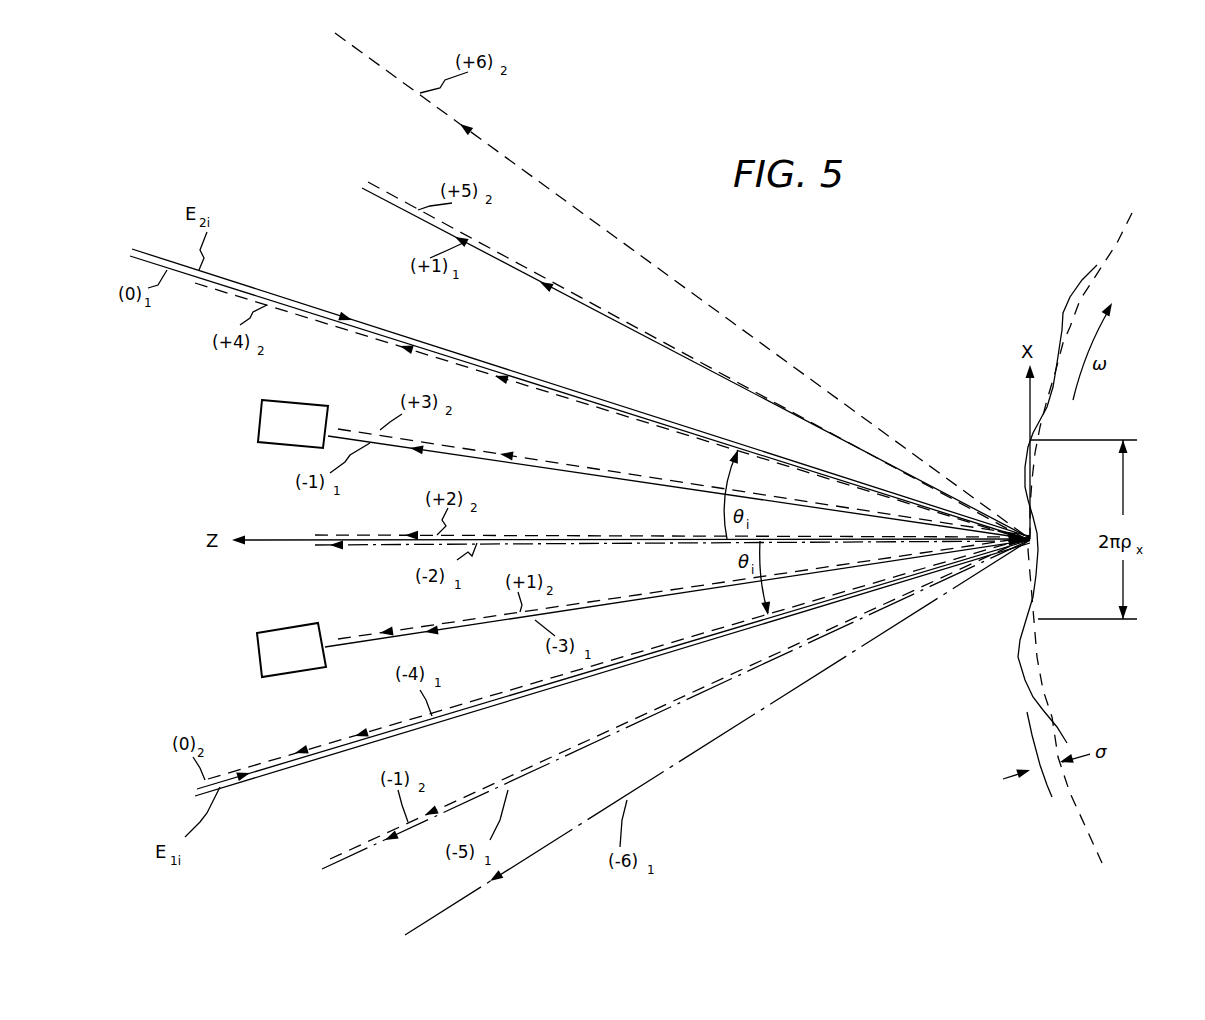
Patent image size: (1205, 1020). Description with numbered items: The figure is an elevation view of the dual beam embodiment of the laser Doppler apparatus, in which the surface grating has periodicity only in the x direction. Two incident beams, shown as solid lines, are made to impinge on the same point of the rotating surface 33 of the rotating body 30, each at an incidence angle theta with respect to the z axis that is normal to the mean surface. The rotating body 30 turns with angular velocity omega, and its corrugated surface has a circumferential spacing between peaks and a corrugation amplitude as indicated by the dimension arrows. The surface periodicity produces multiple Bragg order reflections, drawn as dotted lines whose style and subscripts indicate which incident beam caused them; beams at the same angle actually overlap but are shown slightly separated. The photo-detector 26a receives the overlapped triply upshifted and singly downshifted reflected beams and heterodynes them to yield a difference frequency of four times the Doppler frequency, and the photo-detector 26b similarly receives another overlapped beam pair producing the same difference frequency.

The photo-detector 26a is at (310, 437).
The photo-detector 26b is at (312, 660).
The rotating body 30 is at (1189, 287).
The rotating surface 33 is at (1012, 531).